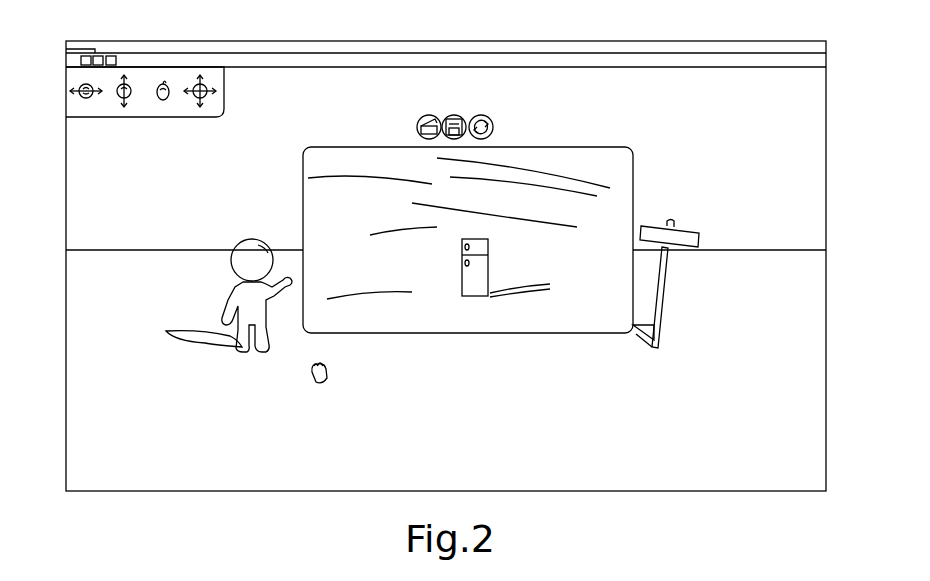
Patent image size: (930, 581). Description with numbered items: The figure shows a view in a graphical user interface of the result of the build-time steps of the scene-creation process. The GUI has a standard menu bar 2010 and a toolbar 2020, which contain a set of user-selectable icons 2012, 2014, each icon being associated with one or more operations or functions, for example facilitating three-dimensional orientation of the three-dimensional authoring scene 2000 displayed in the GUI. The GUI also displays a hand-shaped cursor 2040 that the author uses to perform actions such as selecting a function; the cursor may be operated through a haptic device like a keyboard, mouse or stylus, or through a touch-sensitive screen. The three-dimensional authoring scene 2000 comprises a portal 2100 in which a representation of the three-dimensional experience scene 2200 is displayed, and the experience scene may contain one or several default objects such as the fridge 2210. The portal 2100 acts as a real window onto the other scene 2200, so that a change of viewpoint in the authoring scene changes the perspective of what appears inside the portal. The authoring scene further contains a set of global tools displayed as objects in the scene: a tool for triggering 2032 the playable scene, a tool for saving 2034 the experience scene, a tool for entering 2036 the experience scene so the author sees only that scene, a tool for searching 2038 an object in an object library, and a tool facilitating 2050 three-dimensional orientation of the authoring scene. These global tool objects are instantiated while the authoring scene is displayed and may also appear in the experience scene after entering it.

The 3D authoring scene 2000 is at (816, 482).
The menu bar 2010 is at (289, 60).
The user-selectable icon 2012 is at (129, 97).
The user-selectable icon 2014 is at (66, 61).
The toolbar 2020 is at (224, 106).
The triggering tool 2032 is at (418, 117).
The saving tool 2034 is at (453, 114).
The entering tool 2036 is at (490, 116).
The portal 2100 is at (664, 167).
The 3D experience scene 2200 is at (622, 324).
The fridge 2210 is at (489, 267).
The searching tool 2038 is at (707, 205).
The 3D orientation tool 2050 is at (234, 280).
The cursor 2040 is at (328, 375).